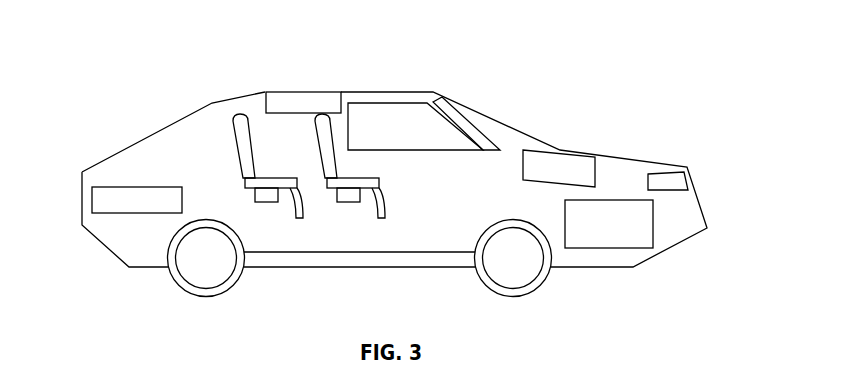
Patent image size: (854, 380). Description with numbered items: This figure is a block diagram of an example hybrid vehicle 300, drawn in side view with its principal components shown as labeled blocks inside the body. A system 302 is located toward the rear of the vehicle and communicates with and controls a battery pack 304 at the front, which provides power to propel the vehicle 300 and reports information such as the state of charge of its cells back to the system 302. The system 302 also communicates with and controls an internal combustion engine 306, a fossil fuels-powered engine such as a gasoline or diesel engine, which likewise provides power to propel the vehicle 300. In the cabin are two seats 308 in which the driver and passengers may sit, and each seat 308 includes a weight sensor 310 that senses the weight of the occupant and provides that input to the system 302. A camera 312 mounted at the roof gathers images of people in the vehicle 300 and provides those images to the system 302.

The hybrid vehicle 300 is at (598, 117).
The system 302 is at (600, 178).
The battery pack 304 is at (153, 187).
The internal combustion engine 306 is at (653, 222).
The seat 308 is at (240, 142).
The weight sensor 310 is at (265, 203).
The camera 312 is at (348, 92).